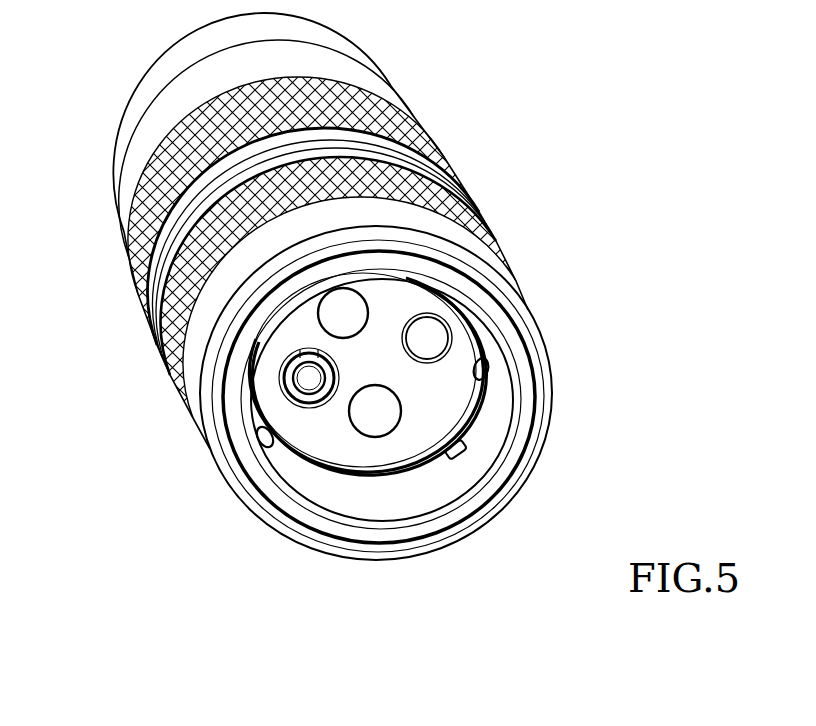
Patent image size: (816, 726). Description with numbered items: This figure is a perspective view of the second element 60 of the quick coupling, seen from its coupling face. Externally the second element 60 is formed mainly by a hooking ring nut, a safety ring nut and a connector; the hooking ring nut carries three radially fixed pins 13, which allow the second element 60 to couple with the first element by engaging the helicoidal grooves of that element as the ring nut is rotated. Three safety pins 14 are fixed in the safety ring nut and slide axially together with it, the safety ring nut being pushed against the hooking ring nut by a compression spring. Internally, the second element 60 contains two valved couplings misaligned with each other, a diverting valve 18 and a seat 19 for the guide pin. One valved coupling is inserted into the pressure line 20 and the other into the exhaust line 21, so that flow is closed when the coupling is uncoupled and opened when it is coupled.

The second element 60 is at (168, 521).
The exhaust line 21 is at (347, 310).
The seat 19 is at (427, 335).
The pressure line 20 is at (375, 413).
The diverting valve 18 is at (307, 382).
The safety pins 14 is at (272, 450).
The radially fixed pins 13 is at (458, 468).